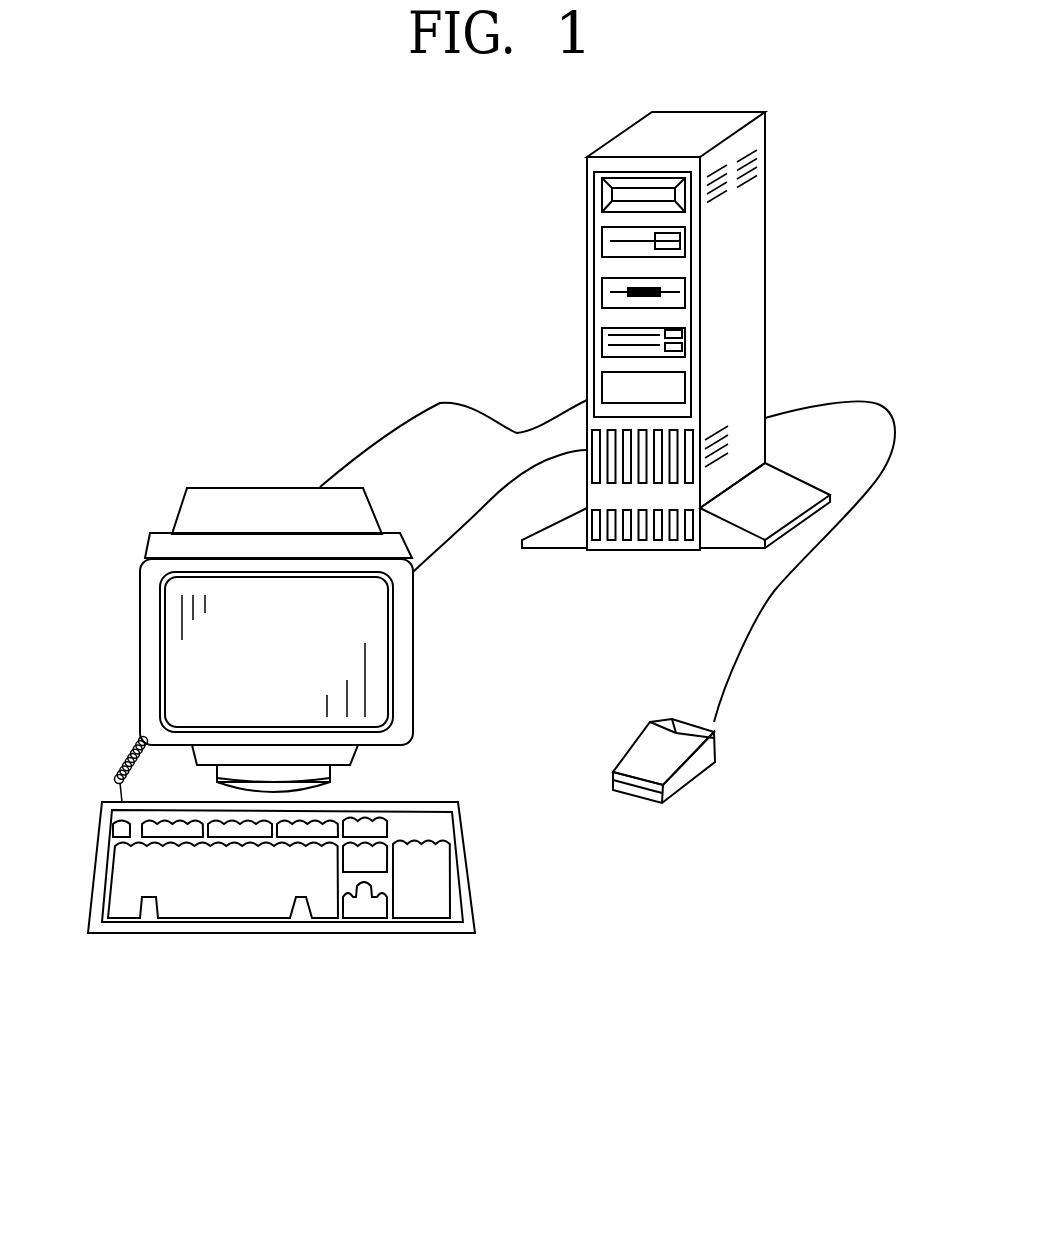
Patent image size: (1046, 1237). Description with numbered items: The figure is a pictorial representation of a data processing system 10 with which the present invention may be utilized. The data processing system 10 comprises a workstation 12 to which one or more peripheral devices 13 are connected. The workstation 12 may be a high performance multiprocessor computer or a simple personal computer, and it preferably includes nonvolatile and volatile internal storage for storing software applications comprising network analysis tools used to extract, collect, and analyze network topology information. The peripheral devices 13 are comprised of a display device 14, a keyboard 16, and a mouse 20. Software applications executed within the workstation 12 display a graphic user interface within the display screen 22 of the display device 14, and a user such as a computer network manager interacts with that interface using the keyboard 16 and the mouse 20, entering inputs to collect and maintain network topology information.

The data processing system 10 is at (300, 310).
The workstation 12 is at (603, 317).
The peripheral devices 13 is at (115, 543).
The display device 14 is at (297, 508).
The keyboard 16 is at (250, 934).
The mouse 20 is at (697, 767).
The display screen 22 is at (368, 612).